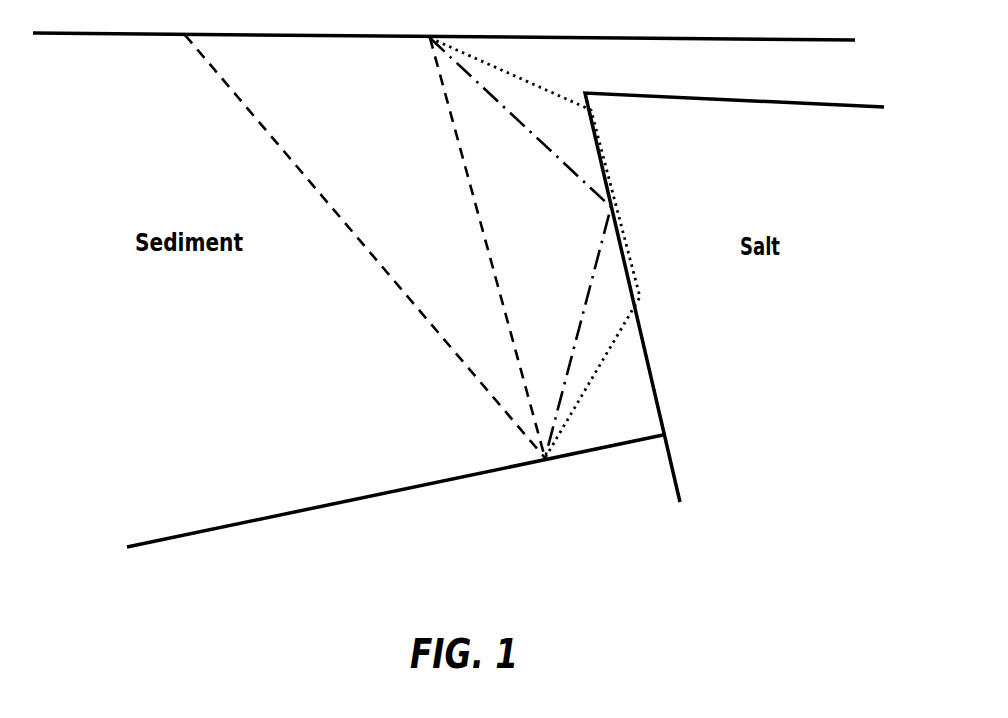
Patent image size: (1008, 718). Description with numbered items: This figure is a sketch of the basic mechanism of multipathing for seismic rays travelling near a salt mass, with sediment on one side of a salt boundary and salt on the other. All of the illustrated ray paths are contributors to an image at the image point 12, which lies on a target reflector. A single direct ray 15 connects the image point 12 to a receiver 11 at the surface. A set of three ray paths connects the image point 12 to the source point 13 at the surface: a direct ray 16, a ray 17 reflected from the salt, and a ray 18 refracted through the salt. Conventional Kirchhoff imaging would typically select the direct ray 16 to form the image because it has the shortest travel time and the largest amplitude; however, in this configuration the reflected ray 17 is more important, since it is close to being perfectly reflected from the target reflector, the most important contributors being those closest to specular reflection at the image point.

The receiver 11 is at (185, 36).
The image point 12 is at (541, 457).
The source point 13 is at (428, 40).
The direct ray 15 is at (300, 172).
The direct ray 16 is at (480, 222).
The reflected ray 17 is at (540, 141).
The refracted ray 18 is at (508, 78).